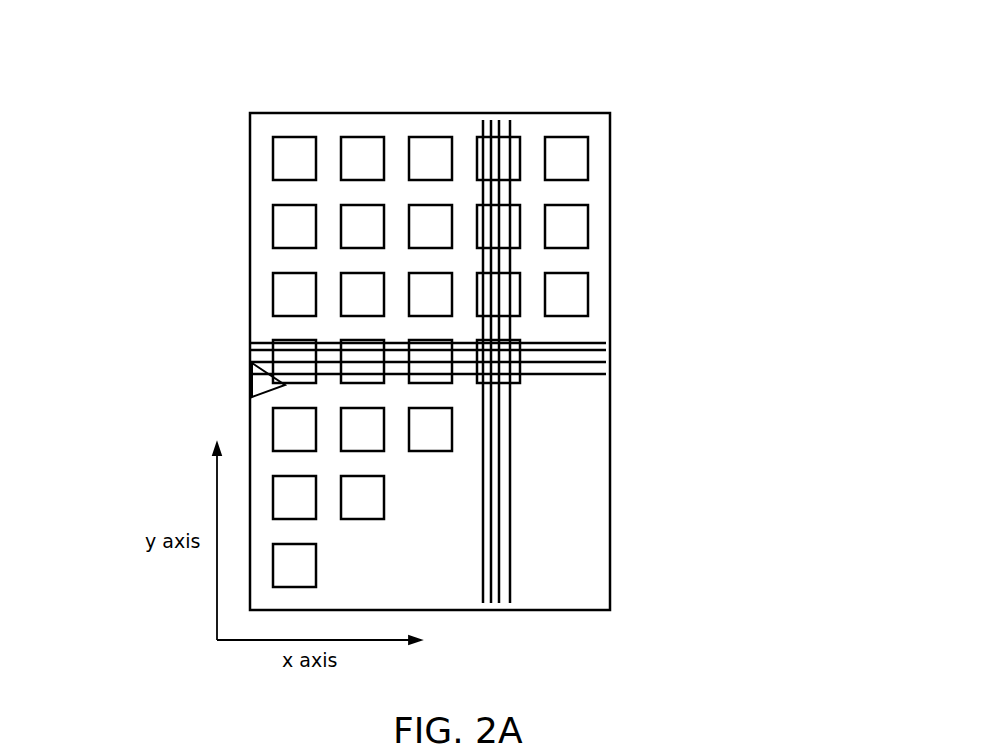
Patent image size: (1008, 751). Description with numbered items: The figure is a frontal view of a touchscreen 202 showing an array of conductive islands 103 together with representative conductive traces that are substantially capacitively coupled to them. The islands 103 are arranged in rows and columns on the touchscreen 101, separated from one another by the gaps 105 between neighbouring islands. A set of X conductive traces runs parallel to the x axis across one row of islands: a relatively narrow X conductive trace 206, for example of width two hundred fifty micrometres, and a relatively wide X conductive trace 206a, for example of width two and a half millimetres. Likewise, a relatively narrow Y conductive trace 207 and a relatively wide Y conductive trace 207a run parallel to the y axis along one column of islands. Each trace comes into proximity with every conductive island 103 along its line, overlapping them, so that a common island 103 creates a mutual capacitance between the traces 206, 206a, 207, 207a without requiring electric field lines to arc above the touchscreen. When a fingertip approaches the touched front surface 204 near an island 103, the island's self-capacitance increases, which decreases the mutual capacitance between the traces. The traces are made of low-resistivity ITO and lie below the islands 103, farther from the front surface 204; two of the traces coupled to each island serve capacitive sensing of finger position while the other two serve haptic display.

The touchscreen substrate 101 is at (395, 160).
The conductive island 103 is at (285, 148).
The gap between conductive islands 105 is at (463, 160).
The touchscreen 202 is at (544, 114).
The touched front surface 204 is at (564, 505).
The relatively narrow X conductive trace 206 is at (262, 350).
The relatively wide X conductive trace 206a is at (285, 363).
The relatively narrow Y conductive trace 207 is at (482, 600).
The relatively wide Y conductive trace 207a is at (493, 600).